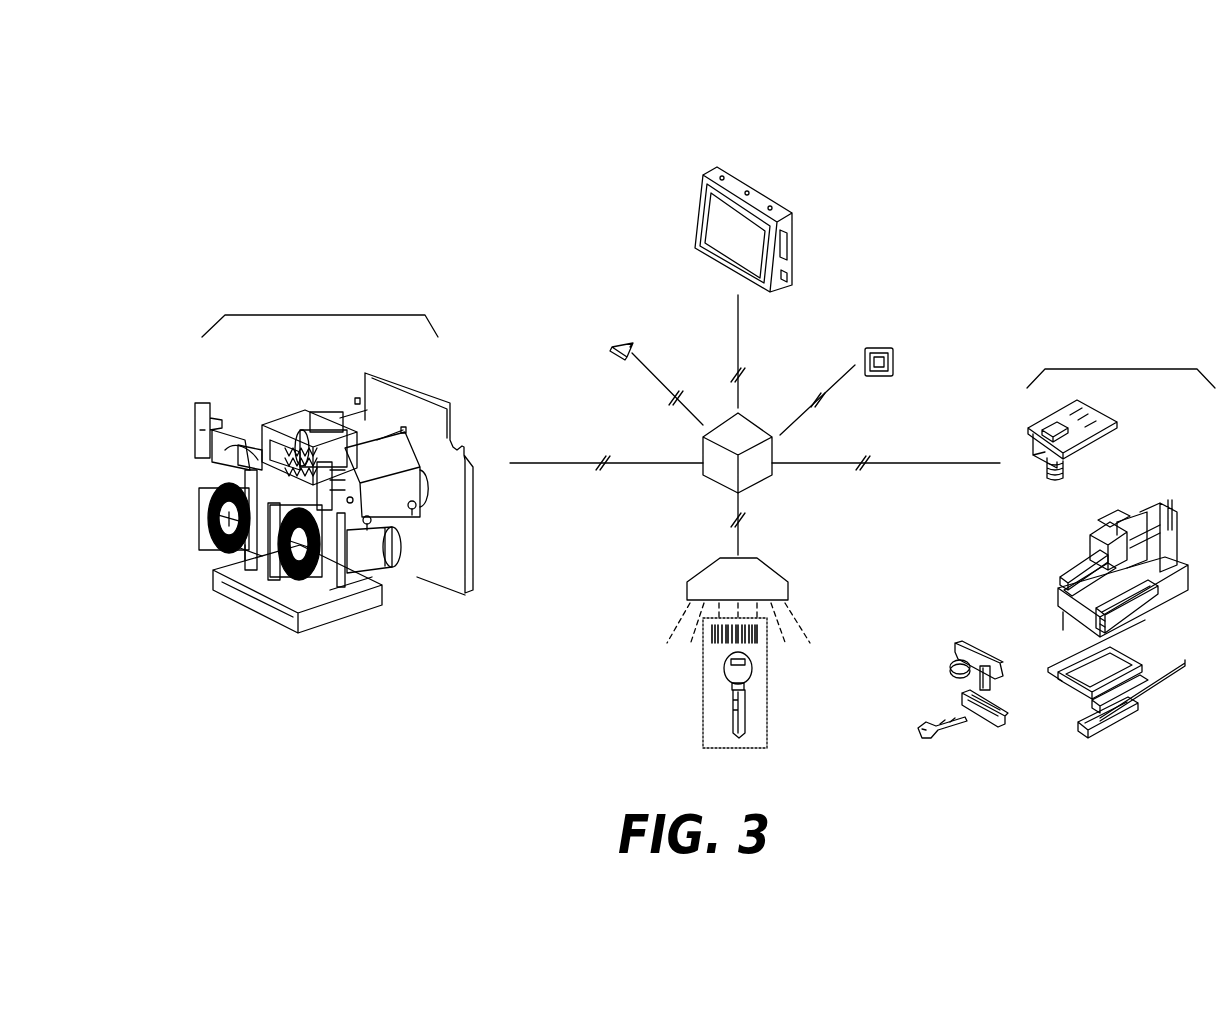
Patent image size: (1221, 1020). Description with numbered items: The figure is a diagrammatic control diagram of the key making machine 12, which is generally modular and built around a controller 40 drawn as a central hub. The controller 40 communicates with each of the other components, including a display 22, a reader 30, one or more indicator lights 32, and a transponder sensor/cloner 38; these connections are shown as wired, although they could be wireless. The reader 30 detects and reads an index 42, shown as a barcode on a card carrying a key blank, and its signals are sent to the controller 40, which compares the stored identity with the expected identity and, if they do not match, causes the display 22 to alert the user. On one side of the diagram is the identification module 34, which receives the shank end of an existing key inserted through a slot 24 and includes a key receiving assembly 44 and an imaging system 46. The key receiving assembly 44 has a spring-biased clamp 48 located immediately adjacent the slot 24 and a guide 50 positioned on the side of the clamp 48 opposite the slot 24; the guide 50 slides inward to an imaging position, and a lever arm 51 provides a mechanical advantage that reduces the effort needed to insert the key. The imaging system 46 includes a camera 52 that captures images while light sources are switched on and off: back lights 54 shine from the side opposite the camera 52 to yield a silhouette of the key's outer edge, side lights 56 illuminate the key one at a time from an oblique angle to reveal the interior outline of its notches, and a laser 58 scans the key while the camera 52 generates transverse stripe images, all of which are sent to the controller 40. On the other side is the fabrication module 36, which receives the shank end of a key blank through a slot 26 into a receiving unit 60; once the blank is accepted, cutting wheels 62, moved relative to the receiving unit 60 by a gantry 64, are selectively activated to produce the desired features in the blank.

The machine 12 is at (342, 104).
The display 22 is at (755, 193).
The slot 24 is at (1005, 722).
The slot 26 is at (243, 548).
The reader 30 is at (745, 588).
The indicator light 32 is at (628, 347).
The identification module 34 is at (1122, 369).
The fabrication module 36 is at (316, 315).
The transponder sensor/cloner 38 is at (893, 359).
The controller 40 is at (747, 445).
The index 42 is at (764, 633).
The key receiving assembly 44 is at (983, 723).
The imaging system 46 is at (1004, 540).
The clamp 48 is at (957, 645).
The guide 50 is at (1058, 598).
The lever arm 51 is at (948, 668).
The camera 52 is at (1065, 462).
The back lights 54 is at (1130, 708).
The side lights 56 is at (1070, 572).
The laser 58 is at (1095, 542).
The receiving unit 60 is at (238, 557).
The cutting wheels 62 is at (199, 507).
The gantry 64 is at (439, 384).